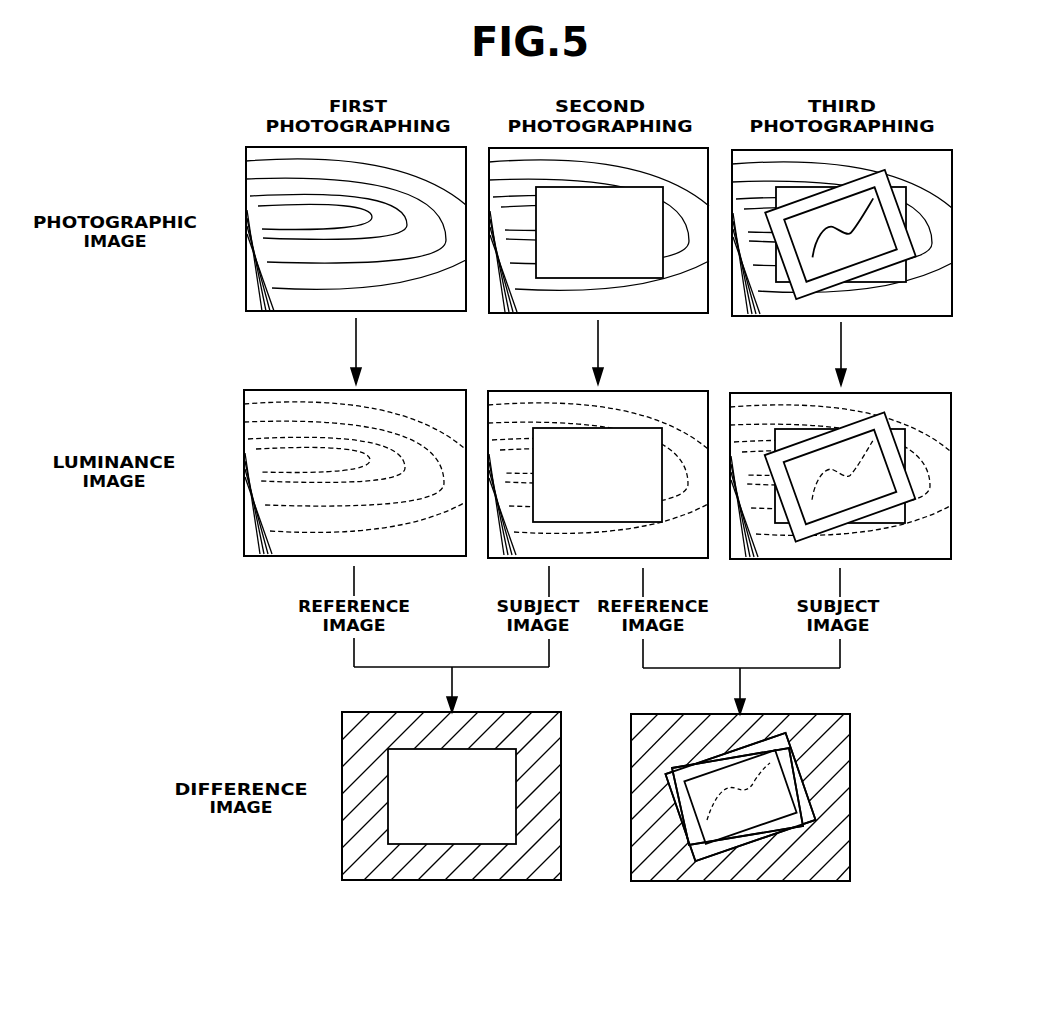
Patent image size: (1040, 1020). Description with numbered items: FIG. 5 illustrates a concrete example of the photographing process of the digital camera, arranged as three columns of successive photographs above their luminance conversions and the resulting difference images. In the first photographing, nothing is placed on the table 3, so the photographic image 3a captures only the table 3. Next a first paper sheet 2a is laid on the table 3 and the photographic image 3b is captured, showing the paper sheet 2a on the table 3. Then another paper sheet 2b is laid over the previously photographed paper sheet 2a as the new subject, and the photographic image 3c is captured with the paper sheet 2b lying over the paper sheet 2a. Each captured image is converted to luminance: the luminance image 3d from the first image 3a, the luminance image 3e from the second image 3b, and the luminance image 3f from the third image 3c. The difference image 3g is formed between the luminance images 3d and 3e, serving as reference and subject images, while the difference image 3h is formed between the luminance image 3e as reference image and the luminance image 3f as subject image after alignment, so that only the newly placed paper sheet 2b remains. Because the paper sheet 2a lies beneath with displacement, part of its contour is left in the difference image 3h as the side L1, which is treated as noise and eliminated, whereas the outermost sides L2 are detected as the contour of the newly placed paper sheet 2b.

The table 3 is at (617, 243).
The first paper sheet 2a is at (548, 187).
The paper sheet 2b is at (912, 231).
The photographic image 3a is at (292, 318).
The photographic image 3b is at (591, 244).
The photographic image 3c is at (878, 265).
The luminance image 3d is at (290, 562).
The luminance image 3e is at (533, 565).
The luminance image 3f is at (783, 563).
The difference image 3g is at (338, 842).
The difference image 3h is at (782, 785).
The side of contour of previously photographed paper sheet L1 is at (764, 747).
The outermost sides L2 is at (692, 760).